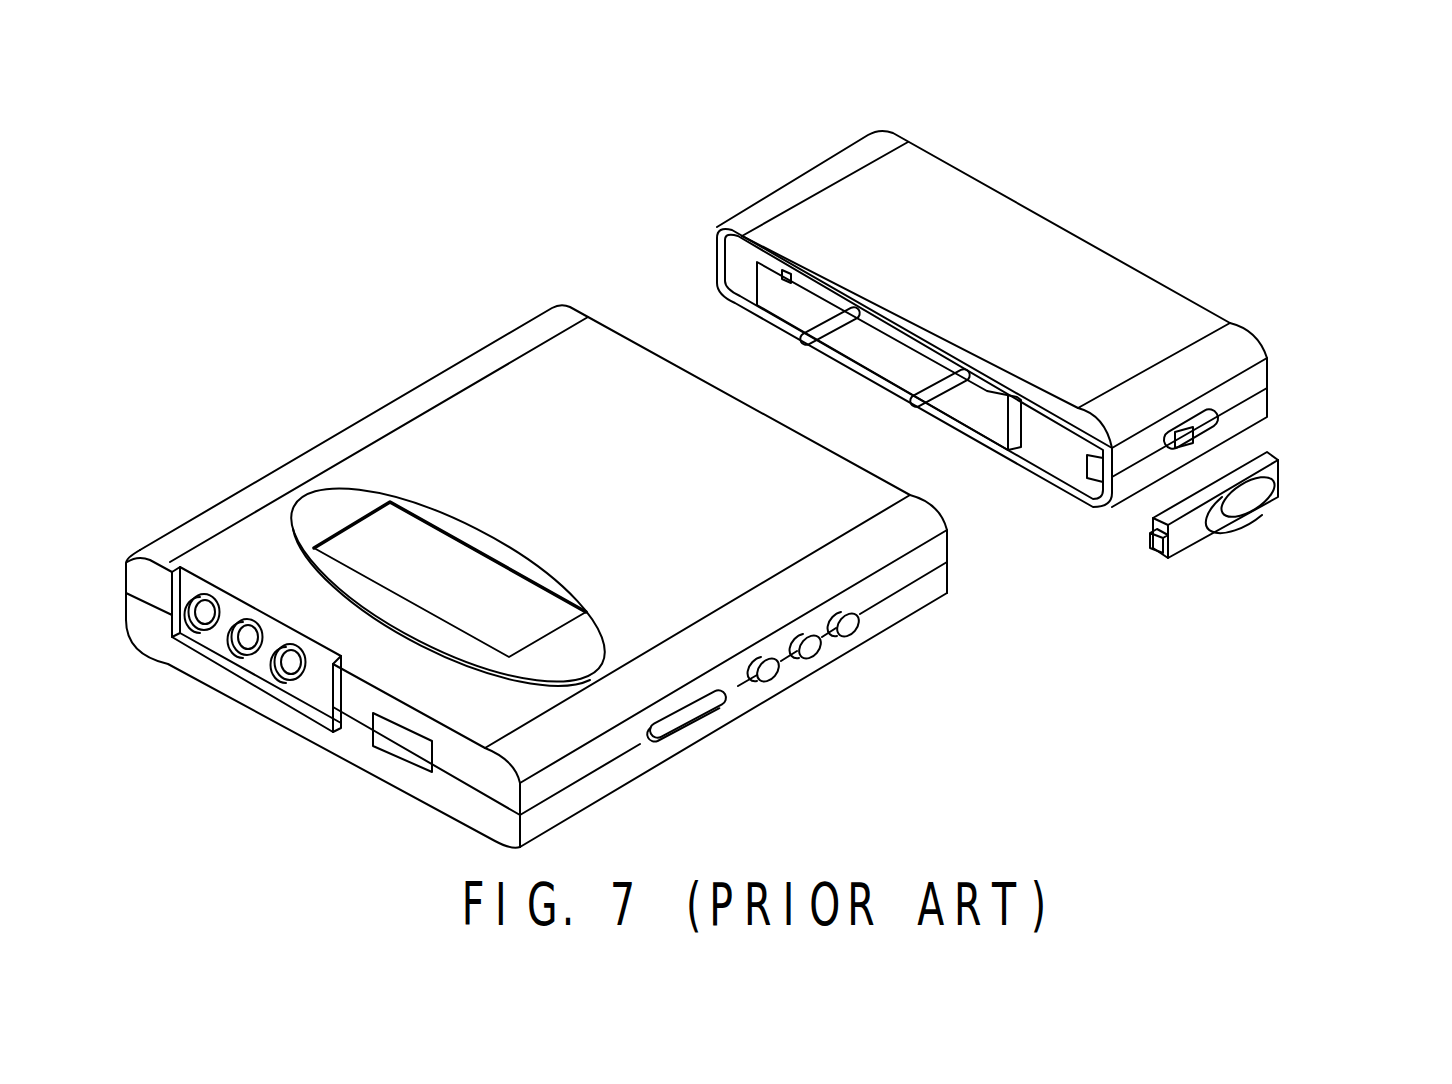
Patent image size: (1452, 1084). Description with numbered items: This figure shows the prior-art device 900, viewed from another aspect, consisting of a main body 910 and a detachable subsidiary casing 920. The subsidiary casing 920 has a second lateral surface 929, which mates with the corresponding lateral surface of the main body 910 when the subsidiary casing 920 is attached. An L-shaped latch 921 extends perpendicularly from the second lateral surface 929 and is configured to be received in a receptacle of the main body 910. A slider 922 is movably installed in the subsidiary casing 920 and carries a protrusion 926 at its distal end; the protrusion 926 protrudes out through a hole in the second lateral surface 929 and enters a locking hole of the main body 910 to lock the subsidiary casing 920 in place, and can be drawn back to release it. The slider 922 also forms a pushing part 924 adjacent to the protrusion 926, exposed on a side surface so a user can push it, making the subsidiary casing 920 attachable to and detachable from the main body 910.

The portable electronic device (prior art) 900 is at (640, 150).
The main body 910 is at (275, 424).
The subsidiary casing 920 is at (1095, 216).
The L-shaped latch 921 is at (880, 353).
The slider 922 is at (1292, 458).
The pushing part 924 is at (1253, 503).
The protrusion 926 is at (1155, 540).
The second lateral surface 929 is at (740, 252).